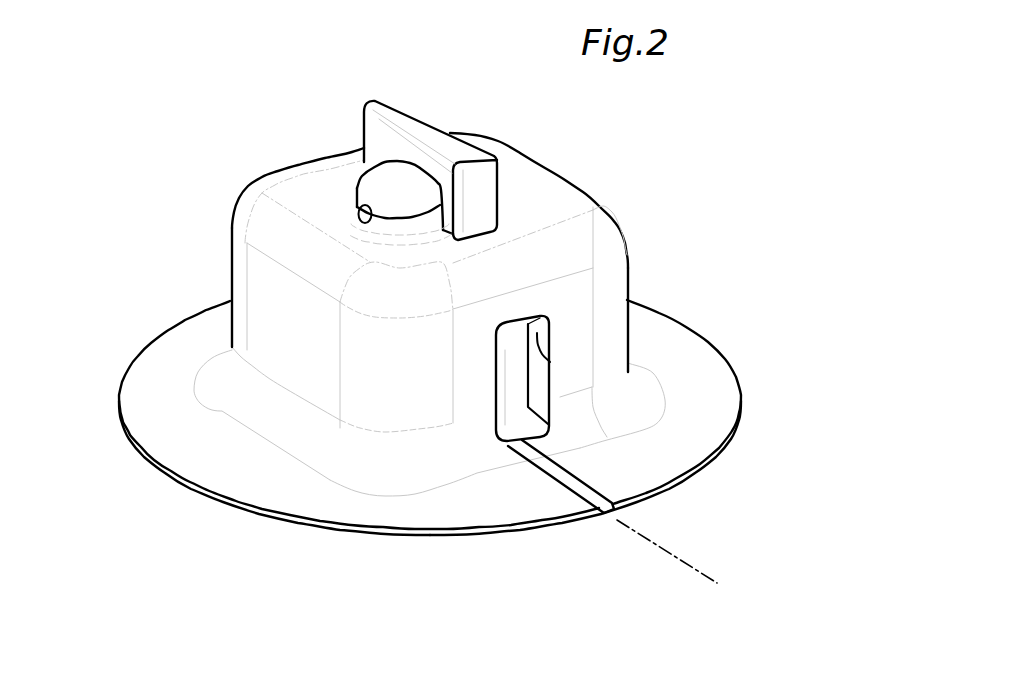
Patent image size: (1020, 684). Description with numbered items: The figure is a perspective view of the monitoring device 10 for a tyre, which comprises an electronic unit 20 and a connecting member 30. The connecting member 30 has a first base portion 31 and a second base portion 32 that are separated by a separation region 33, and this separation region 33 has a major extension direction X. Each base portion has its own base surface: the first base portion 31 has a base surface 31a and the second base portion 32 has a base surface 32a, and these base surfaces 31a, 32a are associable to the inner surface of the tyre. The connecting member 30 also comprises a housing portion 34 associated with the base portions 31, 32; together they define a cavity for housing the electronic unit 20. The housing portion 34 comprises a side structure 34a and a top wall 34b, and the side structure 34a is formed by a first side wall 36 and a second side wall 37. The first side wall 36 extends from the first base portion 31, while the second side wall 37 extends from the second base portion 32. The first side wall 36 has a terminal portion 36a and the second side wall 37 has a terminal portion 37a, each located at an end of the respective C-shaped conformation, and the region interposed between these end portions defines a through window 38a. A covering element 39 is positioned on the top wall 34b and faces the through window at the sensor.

The monitoring device 10 is at (263, 530).
The electronic unit 20 is at (384, 96).
The connecting member 30 is at (709, 323).
The first base portion 31 is at (738, 428).
The base surface 31a is at (683, 488).
The second base portion 32 is at (353, 532).
The base surface 32a is at (182, 487).
The separation region 33 is at (610, 515).
The housing portion 34 is at (583, 188).
The side structure 34a is at (220, 258).
The top wall 34b is at (313, 193).
The first side wall 36 is at (613, 282).
The terminal portion 36a is at (515, 356).
The second side wall 37 is at (313, 350).
The terminal portion 37a is at (495, 374).
The through window 38a is at (513, 356).
The covering element 39 is at (390, 183).
The major extension direction X is at (697, 575).